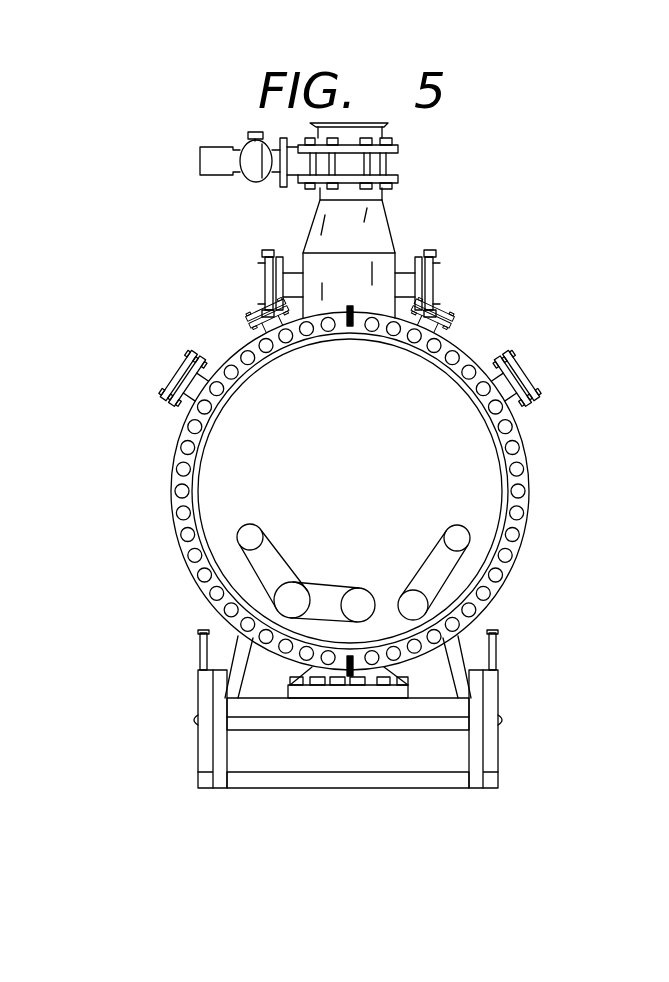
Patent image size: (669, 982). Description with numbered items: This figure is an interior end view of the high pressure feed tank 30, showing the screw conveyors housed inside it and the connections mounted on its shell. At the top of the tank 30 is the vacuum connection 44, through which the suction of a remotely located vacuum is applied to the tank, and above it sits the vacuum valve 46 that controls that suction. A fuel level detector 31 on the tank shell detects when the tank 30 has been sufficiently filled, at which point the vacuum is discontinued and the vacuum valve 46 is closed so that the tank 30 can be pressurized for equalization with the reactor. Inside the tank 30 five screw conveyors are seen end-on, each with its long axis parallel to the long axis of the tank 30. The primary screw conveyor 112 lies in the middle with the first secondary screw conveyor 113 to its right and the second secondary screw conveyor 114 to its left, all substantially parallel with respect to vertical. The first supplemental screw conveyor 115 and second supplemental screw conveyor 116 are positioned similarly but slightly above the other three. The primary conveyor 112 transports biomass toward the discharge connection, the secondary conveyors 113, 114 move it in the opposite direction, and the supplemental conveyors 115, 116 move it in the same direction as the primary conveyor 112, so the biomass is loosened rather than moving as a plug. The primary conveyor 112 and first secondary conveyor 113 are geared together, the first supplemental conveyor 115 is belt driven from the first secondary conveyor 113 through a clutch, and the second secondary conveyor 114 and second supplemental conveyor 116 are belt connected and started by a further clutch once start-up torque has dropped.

The high pressure feed tank 30 is at (505, 302).
The fuel level detector 31 is at (535, 378).
The vacuum connection 44 is at (430, 237).
The vacuum valve 46 is at (425, 152).
The primary screw conveyor 112 is at (380, 552).
The first secondary screw conveyor 113 is at (398, 585).
The second secondary screw conveyor 114 is at (325, 522).
The first supplemental screw conveyor 115 is at (450, 505).
The second supplemental screw conveyor 116 is at (258, 500).